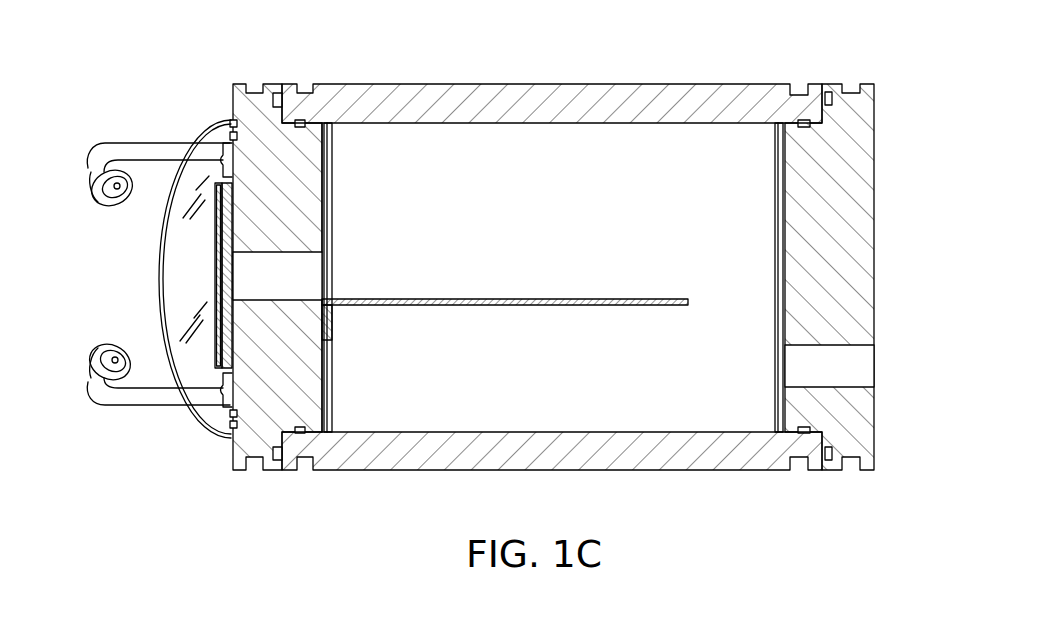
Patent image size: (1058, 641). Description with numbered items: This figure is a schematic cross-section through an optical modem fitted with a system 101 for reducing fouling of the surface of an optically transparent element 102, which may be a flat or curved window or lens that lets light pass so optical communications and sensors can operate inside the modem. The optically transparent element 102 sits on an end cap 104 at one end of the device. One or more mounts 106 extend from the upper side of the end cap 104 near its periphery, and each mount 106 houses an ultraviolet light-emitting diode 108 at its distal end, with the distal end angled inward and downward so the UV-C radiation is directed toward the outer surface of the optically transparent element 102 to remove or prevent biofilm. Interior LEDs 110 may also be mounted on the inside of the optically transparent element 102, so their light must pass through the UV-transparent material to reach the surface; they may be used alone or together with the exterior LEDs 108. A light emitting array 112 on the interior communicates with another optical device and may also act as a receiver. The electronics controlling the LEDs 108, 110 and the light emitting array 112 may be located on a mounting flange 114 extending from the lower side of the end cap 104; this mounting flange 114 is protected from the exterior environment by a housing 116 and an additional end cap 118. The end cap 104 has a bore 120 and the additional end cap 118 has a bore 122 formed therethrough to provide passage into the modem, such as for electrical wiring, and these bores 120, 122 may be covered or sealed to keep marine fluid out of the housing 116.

The system for reducing fouling 101 is at (180, 35).
The optically transparent element 102 is at (160, 280).
The end cap 104 is at (233, 84).
The mount 106 is at (104, 147).
The ultraviolet light-emitting diode 108 is at (122, 378).
The interior LED 110 is at (225, 387).
The light emitting array 112 is at (217, 360).
The mounting flange 114 is at (552, 307).
The housing 116 is at (571, 84).
The additional end cap 118 is at (869, 84).
The bore 120 is at (297, 252).
The bore 122 is at (856, 350).